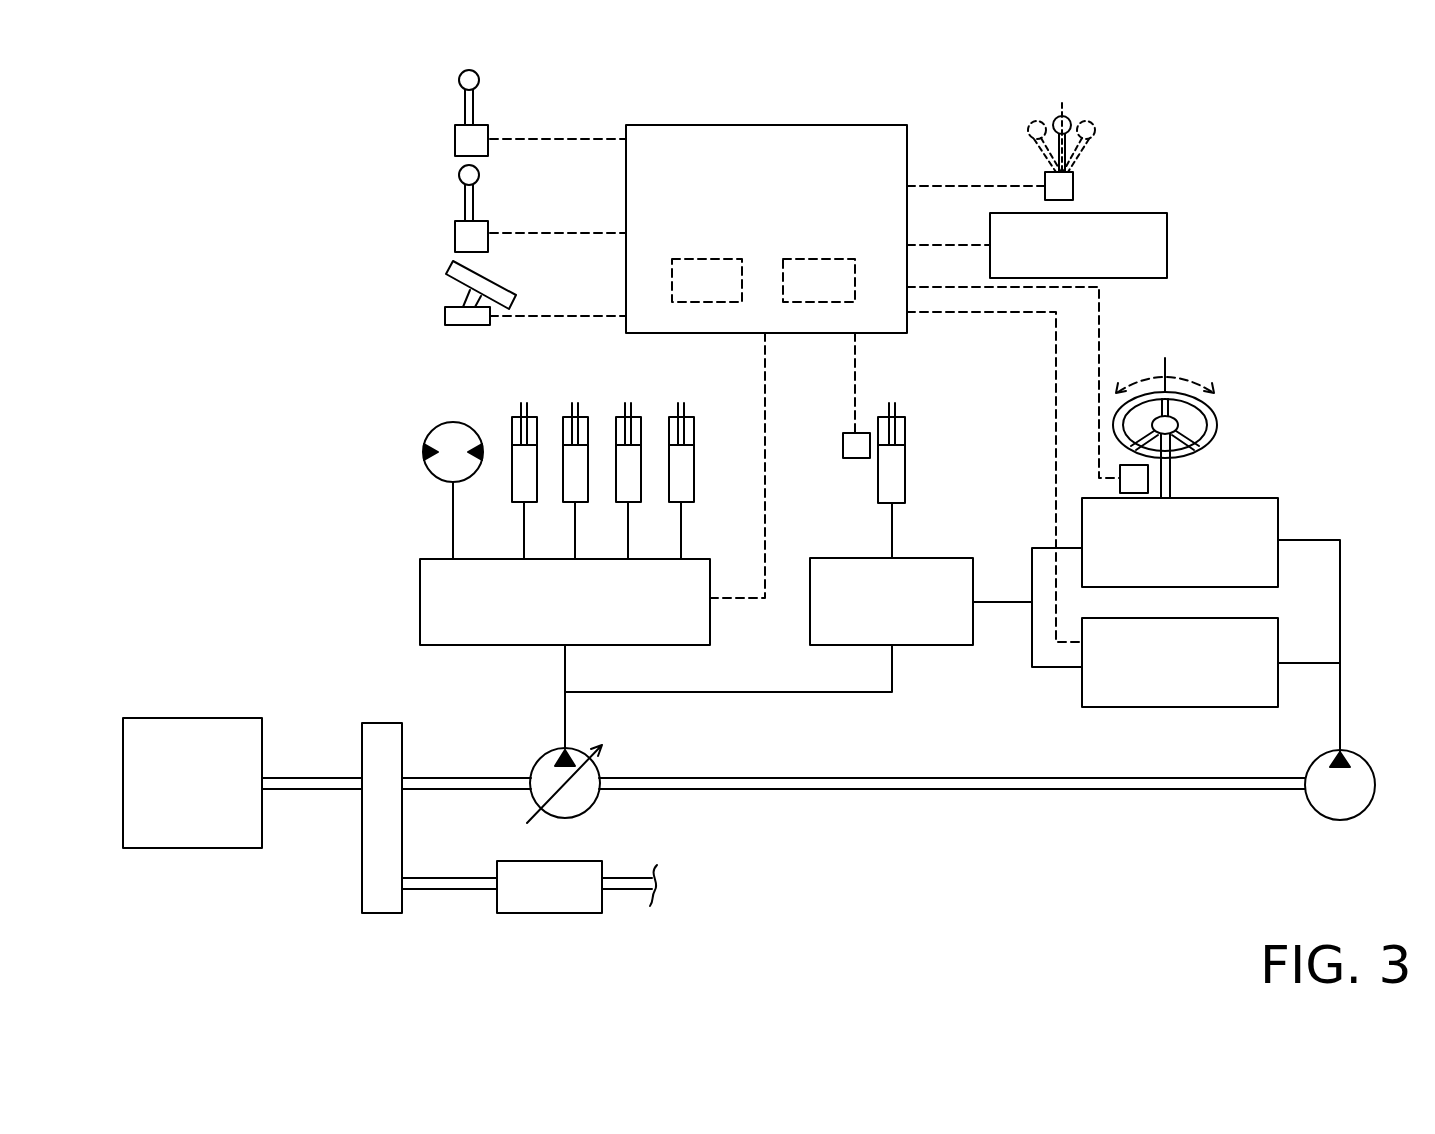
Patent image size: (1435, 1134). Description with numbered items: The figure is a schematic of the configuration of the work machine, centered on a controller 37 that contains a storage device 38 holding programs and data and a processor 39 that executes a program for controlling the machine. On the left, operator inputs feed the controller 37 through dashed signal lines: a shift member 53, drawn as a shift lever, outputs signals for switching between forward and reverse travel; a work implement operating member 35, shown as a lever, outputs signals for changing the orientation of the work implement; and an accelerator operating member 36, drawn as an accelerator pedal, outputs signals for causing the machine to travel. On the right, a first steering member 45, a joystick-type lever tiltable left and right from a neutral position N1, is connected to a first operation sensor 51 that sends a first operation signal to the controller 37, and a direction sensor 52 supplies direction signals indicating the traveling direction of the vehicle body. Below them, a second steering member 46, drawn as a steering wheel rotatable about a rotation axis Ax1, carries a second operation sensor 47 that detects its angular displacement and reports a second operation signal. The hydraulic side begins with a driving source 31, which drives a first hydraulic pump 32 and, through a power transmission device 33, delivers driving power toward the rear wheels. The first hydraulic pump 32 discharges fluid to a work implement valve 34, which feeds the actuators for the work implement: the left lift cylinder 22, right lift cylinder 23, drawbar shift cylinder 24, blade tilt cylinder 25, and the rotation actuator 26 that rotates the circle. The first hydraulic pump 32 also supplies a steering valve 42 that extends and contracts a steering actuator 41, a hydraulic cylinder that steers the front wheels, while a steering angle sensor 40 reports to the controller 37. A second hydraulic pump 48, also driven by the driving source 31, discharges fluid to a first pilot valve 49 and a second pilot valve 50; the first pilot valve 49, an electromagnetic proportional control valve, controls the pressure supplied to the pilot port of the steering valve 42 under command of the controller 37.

The left lift cylinder 22 is at (687, 413).
The right lift cylinder 23 is at (634, 413).
The drawbar shift cylinder 24 is at (581, 413).
The blade tilt cylinder 25 is at (530, 413).
The rotation actuator 26 is at (455, 422).
The driving source 31 is at (172, 718).
The first hydraulic pump 32 is at (545, 757).
The power transmission device 33 is at (583, 861).
The work implement valve 34 is at (420, 595).
The work implement operating member 35 is at (463, 196).
The accelerator operating member 36 is at (445, 316).
The controller 37 is at (766, 125).
The storage device 38 is at (672, 280).
The processor 39 is at (823, 302).
The steering angle sensor 40 is at (853, 458).
The steering actuator 41 is at (895, 413).
The steering valve 42 is at (938, 558).
The first steering member 45 is at (1118, 130).
The second steering member 46 is at (1218, 425).
The second operation sensor 47 is at (1148, 478).
The second hydraulic pump 48 is at (1343, 821).
The first pilot valve 49 is at (1183, 708).
The second pilot valve 50 is at (1279, 518).
The first operation sensor 51 is at (1074, 186).
The direction sensor 52 is at (1168, 240).
The shift member 53 is at (463, 100).
The neutral position N1 is at (1062, 126).
The rotation axis Ax1 is at (1165, 368).